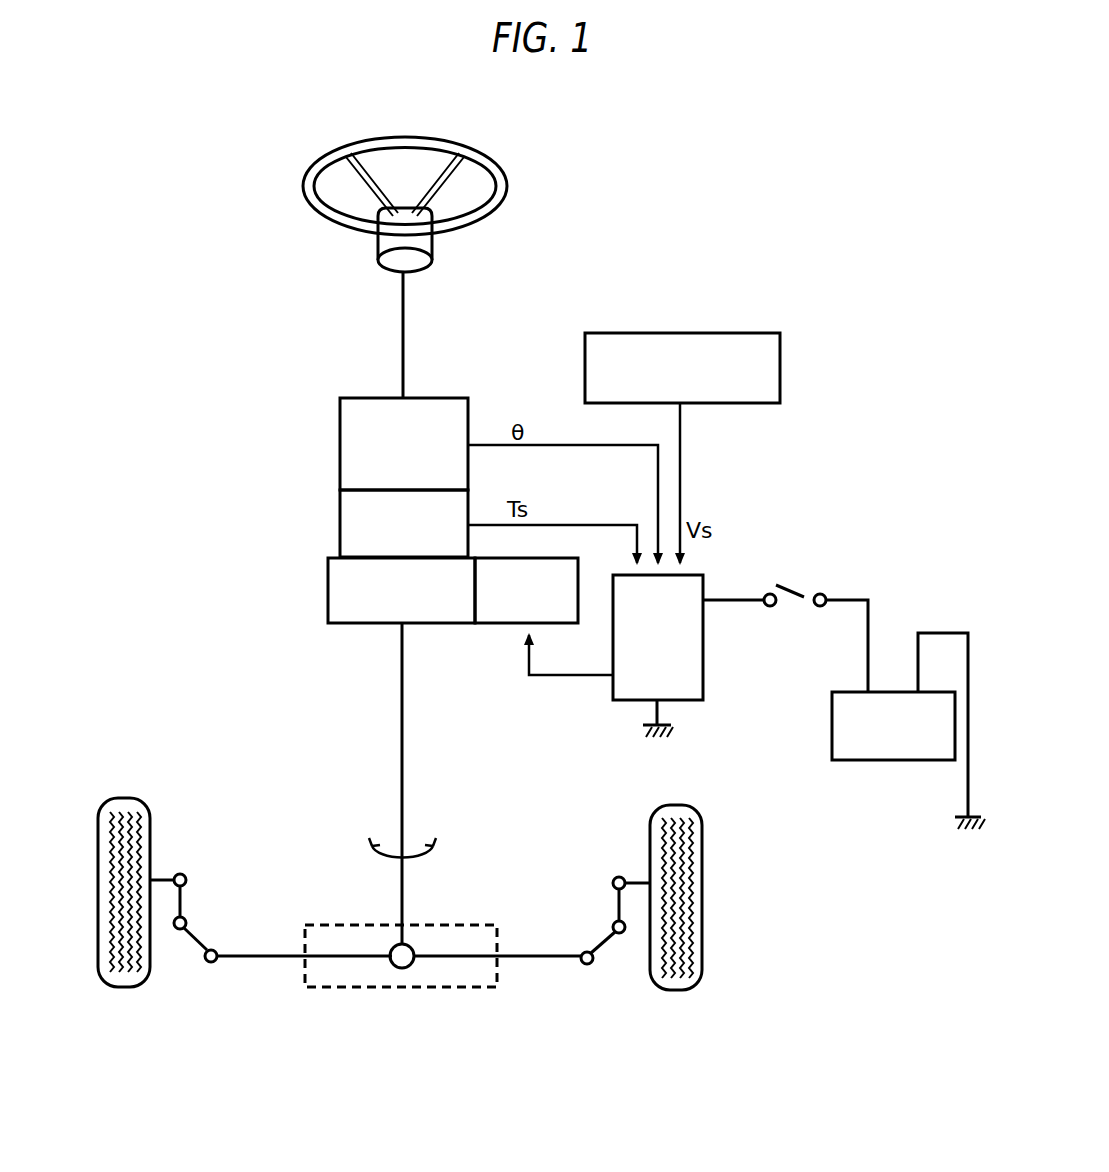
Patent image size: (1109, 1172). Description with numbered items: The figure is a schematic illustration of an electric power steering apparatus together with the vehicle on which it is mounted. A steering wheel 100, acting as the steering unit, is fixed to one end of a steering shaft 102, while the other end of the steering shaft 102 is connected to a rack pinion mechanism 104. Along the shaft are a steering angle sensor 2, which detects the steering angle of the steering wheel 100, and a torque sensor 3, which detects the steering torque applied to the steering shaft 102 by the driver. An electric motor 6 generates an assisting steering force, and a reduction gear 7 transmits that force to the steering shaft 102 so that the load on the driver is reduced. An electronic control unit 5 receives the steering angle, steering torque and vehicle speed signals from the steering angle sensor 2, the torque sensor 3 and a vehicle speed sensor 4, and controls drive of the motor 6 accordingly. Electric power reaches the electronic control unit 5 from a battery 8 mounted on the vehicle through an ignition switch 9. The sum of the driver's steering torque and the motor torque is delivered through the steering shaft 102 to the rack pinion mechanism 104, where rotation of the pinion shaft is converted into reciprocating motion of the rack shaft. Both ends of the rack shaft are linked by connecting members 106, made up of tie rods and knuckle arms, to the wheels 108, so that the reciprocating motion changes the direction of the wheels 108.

The steering wheel 100 is at (509, 185).
The steering shaft 102 is at (403, 328).
The steering angle sensor 2 is at (340, 447).
The torque sensor 3 is at (340, 527).
The reduction gear 7 is at (328, 590).
The electric motor 6 is at (497, 626).
The vehicle speed sensor 4 is at (682, 333).
The electronic control unit 5 is at (705, 637).
The ignition switch 9 is at (812, 580).
The battery 8 is at (832, 727).
The rack pinion mechanism 104 is at (348, 924).
The connecting members 106 is at (214, 923).
The wheels 108 is at (125, 798).